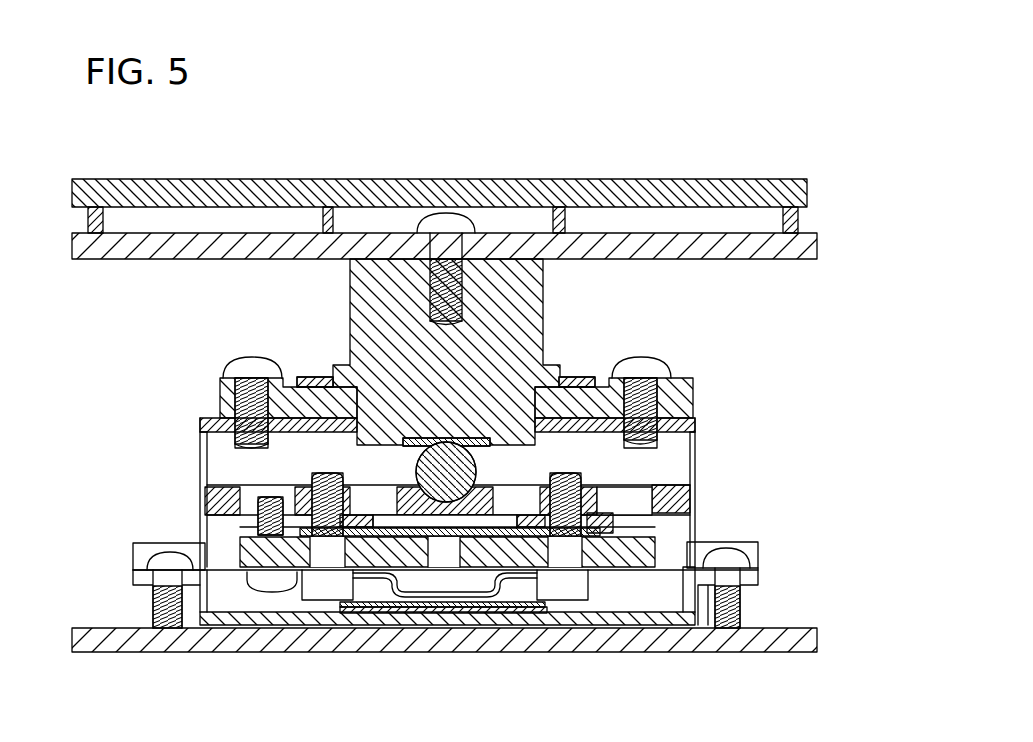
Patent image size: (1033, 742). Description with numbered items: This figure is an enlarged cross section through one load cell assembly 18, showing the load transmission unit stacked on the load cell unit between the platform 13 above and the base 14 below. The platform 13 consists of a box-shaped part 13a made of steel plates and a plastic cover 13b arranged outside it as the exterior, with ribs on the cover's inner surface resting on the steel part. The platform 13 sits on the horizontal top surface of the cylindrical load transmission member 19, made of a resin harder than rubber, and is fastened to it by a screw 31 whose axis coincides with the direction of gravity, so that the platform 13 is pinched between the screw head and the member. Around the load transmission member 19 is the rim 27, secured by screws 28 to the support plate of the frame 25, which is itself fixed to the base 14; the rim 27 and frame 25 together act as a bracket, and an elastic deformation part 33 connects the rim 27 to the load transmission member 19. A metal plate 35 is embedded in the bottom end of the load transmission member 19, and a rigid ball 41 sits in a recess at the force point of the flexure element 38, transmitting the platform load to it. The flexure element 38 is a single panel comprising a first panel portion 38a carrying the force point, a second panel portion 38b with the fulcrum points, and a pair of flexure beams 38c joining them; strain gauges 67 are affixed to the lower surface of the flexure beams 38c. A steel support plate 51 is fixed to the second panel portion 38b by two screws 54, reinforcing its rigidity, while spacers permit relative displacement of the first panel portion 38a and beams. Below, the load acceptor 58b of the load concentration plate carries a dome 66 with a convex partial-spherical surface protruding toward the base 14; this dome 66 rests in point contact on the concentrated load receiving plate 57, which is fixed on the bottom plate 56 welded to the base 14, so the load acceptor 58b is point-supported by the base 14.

The platform 13 is at (473, 190).
The box-shaped part 13a is at (690, 232).
The plastic cover 13b is at (618, 180).
The base 14 is at (735, 640).
The load cell assembly 18 is at (219, 291).
The load transmission member 19 is at (350, 300).
The frame 25 is at (200, 432).
The rim 27 is at (220, 394).
The screw 28 is at (250, 357).
The screw 31 is at (444, 212).
The elastic deformation part 33 is at (312, 377).
The metal plate 35 is at (440, 438).
The flexure element 38 is at (454, 462).
The first panel portion 38a is at (552, 486).
The second panel portion 38b is at (594, 486).
The flexure beams 38c is at (205, 492).
The ball 41 is at (462, 446).
The support plate 51 is at (690, 540).
The screws 54 is at (318, 473).
The bottom plate 56 is at (648, 625).
The concentrated load receiving plate 57 is at (470, 607).
The load acceptor 58b is at (535, 600).
The dome 66 is at (415, 613).
The strain gauges 67 is at (205, 524).